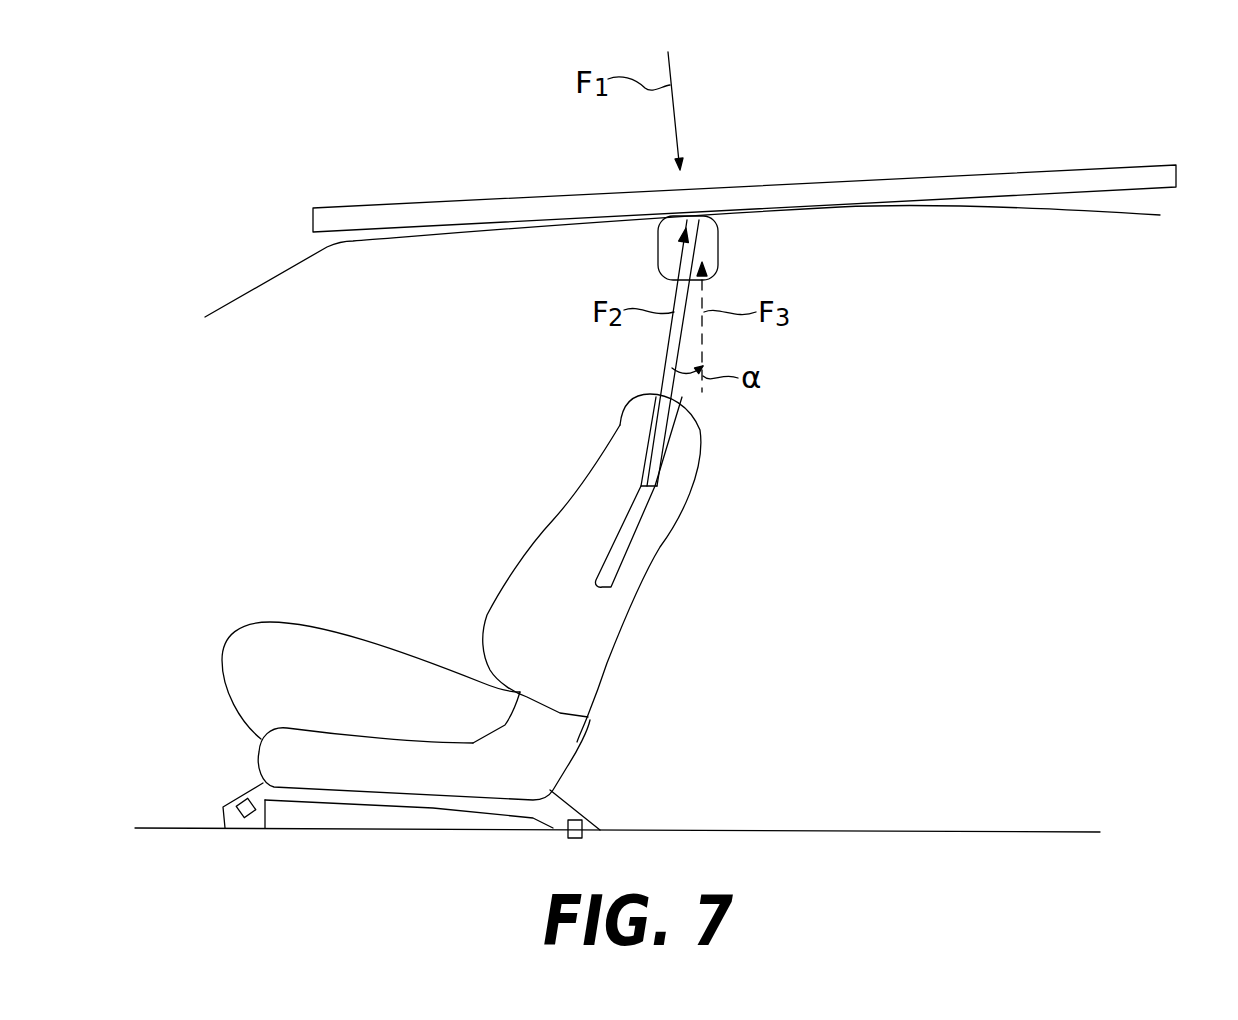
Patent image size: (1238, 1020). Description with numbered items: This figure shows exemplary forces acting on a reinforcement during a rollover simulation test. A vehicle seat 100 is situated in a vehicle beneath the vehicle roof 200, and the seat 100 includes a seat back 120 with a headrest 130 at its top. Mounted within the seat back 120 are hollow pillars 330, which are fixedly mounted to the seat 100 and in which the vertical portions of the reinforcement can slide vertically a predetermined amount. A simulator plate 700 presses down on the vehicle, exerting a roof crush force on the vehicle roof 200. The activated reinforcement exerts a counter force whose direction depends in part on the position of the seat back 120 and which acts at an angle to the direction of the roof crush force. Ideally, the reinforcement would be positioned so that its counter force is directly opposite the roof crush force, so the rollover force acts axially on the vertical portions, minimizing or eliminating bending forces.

The simulator plate 700 is at (858, 191).
The vehicle roof 200 is at (1012, 207).
The headrest 130 is at (720, 235).
The vehicle seat 100 is at (477, 616).
The seat back 120 is at (607, 568).
The hollow pillars 330 is at (637, 543).